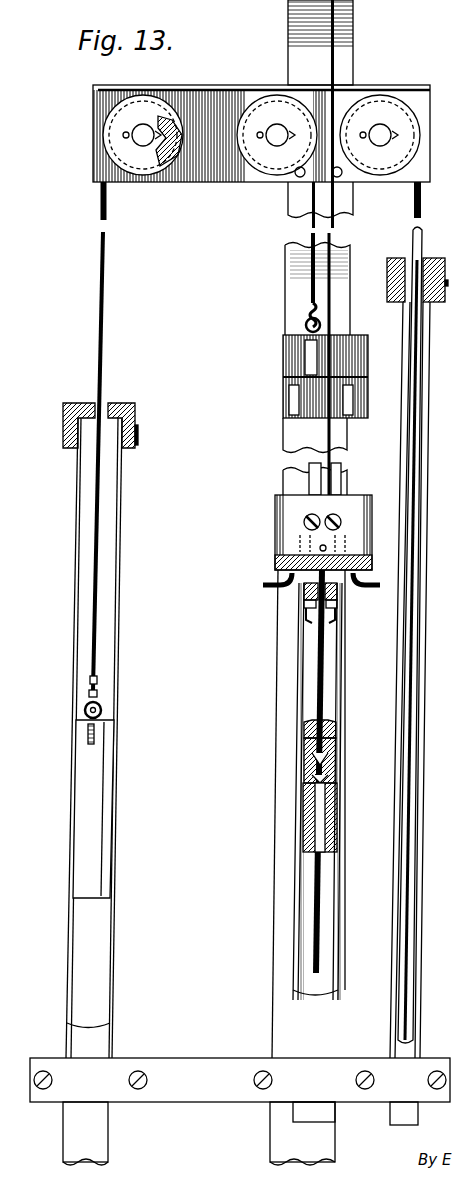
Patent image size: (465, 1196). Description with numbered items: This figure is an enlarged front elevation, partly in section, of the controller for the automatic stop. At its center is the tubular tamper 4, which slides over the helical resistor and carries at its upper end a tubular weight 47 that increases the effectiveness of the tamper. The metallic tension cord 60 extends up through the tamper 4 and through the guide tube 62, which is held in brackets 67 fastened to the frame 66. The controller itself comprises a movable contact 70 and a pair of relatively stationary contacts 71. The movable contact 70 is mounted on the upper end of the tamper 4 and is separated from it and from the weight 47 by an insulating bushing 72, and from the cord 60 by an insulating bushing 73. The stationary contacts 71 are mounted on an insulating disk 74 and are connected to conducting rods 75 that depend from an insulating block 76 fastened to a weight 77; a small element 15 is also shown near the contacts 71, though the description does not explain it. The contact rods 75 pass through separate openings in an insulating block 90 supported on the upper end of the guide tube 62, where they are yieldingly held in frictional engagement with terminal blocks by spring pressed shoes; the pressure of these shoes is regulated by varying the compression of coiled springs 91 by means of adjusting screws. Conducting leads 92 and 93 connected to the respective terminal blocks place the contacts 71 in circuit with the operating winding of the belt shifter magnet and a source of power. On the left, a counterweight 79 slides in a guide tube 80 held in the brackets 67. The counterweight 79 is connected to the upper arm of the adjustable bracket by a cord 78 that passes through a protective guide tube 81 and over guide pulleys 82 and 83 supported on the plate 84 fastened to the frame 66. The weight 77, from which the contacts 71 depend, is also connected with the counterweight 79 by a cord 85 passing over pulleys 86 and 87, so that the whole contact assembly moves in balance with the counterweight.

The tamper 4 is at (322, 910).
The clamp member 15 is at (303, 606).
The tubular weight 47 is at (338, 823).
The cord 60 is at (335, 25).
The guide tube 62 is at (300, 660).
The frame 66 is at (348, 62).
The brackets 67 is at (190, 1066).
The movable contact 70 is at (302, 727).
The stationary contacts 71 is at (304, 616).
The insulating bushing 72 is at (338, 760).
The insulating bushing 73 is at (328, 718).
The insulating disk 74 is at (345, 598).
The conducting rods 75 is at (308, 472).
The insulating block 76 is at (283, 403).
The weight 77 is at (362, 358).
The cord 78 is at (412, 672).
The counterweight 79 is at (104, 784).
The guide tube 80 is at (118, 658).
The protective guide tube 81 is at (426, 614).
The guide pulley 82 is at (405, 125).
The guide pulley 83 is at (172, 128).
The plate 84 is at (220, 170).
The cord 85 is at (107, 297).
The pulley 86 is at (267, 158).
The pulley 87 is at (140, 158).
The insulating block 90 is at (283, 527).
The coiled springs 91 is at (308, 520).
The conducting lead 92 is at (262, 585).
The conducting lead 93 is at (370, 588).